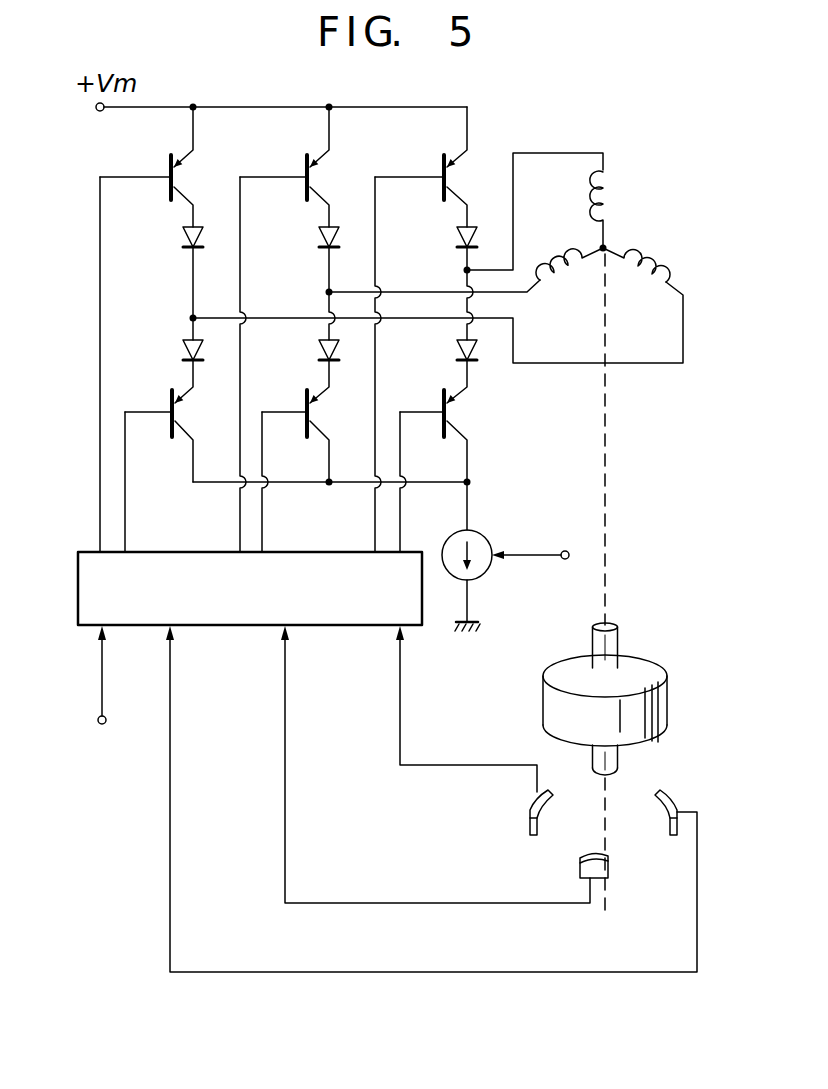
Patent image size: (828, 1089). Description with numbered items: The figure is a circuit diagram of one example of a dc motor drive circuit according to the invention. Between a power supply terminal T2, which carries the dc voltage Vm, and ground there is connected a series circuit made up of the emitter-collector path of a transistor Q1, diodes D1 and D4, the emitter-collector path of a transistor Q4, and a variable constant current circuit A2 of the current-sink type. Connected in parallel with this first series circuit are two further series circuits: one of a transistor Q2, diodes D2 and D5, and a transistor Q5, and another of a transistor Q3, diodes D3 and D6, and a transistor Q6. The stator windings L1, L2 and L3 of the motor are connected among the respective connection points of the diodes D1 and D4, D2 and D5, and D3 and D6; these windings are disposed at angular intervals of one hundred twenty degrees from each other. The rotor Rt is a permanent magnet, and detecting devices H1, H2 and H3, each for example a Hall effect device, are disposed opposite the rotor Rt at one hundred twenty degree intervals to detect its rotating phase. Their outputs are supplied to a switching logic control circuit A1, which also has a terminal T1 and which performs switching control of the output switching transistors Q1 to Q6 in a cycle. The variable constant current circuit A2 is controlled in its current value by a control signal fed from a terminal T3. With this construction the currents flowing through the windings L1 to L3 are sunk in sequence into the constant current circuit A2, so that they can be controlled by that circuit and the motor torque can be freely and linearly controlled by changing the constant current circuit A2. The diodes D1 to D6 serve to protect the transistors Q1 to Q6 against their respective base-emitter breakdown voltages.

The transistor Q1 is at (442, 198).
The transistor Q2 is at (305, 198).
The transistor Q3 is at (169, 198).
The transistor Q4 is at (442, 438).
The transistor Q5 is at (307, 438).
The transistor Q6 is at (171, 438).
The diode D1 is at (466, 252).
The diode D2 is at (326, 252).
The diode D3 is at (191, 252).
The diode D4 is at (457, 354).
The diode D5 is at (319, 354).
The diode D6 is at (183, 354).
The stator winding L1 is at (610, 198).
The stator winding L2 is at (552, 288).
The stator winding L3 is at (640, 288).
The terminal T1 is at (102, 724).
The power supply terminal T2 is at (100, 111).
The terminal T3 is at (563, 551).
The switching logic control circuit A1 is at (222, 626).
The variable constant current circuit A2 is at (486, 573).
The rotor Rt is at (663, 693).
The detecting device H1 is at (528, 822).
The detecting device H2 is at (610, 876).
The detecting device H3 is at (662, 793).